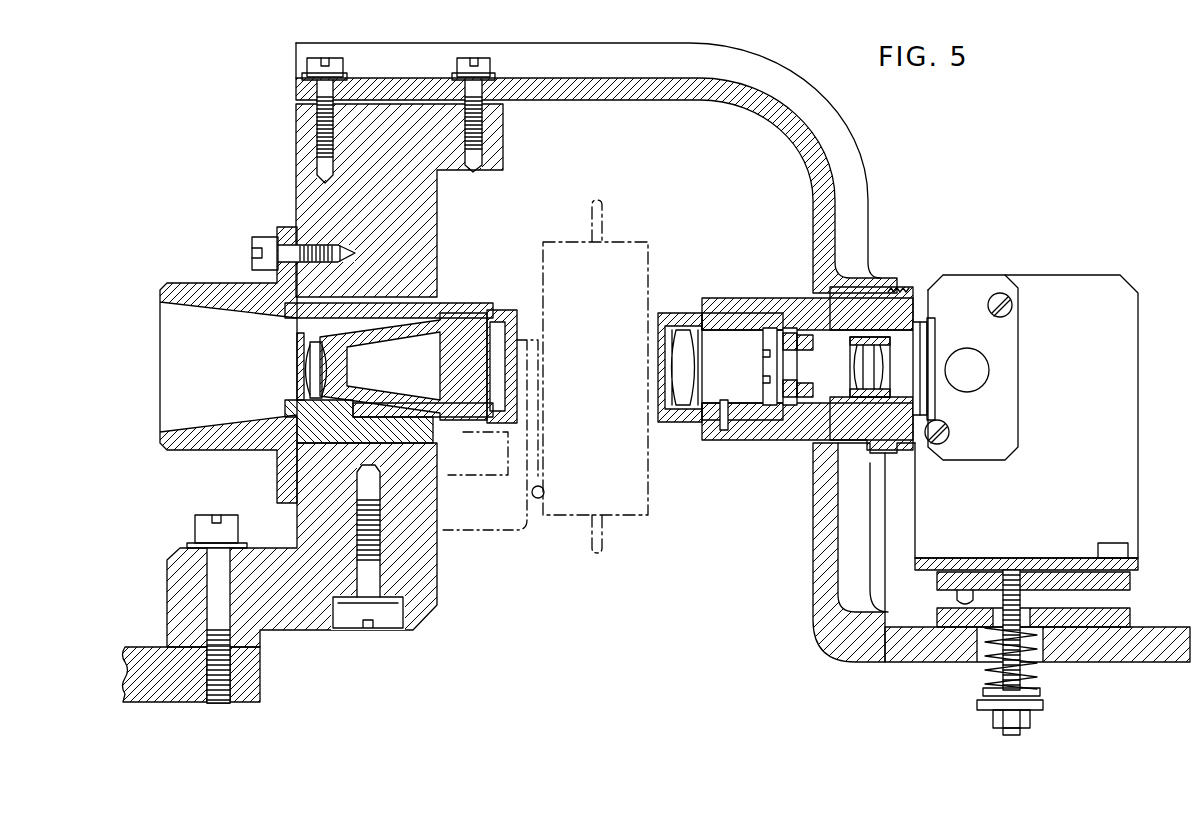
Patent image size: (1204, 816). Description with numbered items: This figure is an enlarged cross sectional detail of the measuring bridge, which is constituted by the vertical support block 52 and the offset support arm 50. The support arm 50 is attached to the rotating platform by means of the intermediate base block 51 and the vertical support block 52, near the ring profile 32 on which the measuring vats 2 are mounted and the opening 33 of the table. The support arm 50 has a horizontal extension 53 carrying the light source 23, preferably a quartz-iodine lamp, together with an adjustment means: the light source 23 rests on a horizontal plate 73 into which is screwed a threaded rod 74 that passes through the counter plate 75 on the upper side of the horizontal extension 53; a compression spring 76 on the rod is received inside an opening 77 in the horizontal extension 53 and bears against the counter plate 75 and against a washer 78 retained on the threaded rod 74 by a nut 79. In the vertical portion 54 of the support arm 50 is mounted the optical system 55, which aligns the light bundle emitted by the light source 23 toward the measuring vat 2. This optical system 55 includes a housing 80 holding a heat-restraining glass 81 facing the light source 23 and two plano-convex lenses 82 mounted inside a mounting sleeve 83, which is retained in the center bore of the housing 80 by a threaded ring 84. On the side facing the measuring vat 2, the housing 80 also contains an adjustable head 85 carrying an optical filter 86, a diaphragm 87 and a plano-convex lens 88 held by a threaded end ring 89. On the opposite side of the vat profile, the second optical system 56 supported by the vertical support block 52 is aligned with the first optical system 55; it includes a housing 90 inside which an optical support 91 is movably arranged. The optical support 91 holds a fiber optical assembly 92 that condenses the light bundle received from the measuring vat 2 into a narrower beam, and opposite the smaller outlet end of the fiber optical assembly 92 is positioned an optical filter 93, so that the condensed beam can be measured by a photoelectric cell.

The measuring vat 2 is at (616, 514).
The light source 23 is at (1109, 418).
The ring profile 32 is at (510, 545).
The opening 33 is at (250, 670).
The offset support arm 50 is at (632, 86).
The intermediate base block 51 is at (325, 618).
The vertical support block 52 is at (322, 203).
The horizontal extension 53 is at (915, 650).
The vertical portion 54 is at (822, 527).
The optical system 55 is at (758, 438).
The optical system 56 is at (218, 273).
The horizontal plate 73 is at (1120, 580).
The threaded rod 74 is at (1014, 578).
The counter plate 75 is at (1120, 618).
The compression spring 76 is at (1036, 680).
The opening 77 is at (985, 662).
The washer 78 is at (1060, 712).
The nut 79 is at (992, 718).
The housing 80 is at (738, 308).
The heat-restraining glass 81 is at (918, 340).
The plano-convex lenses 82 is at (850, 362).
The mounting sleeve 83 is at (870, 422).
The threaded ring 84 is at (922, 396).
The adjustable head 85 is at (779, 320).
The optical filter 86 is at (717, 312).
The diaphragm 87 is at (683, 316).
The plano-convex lens 88 is at (722, 432).
The threaded end ring 89 is at (684, 420).
The housing 90 is at (252, 435).
The optical support 91 is at (470, 305).
The fiber optical assembly 92 is at (316, 378).
The optical filter 93 is at (293, 345).